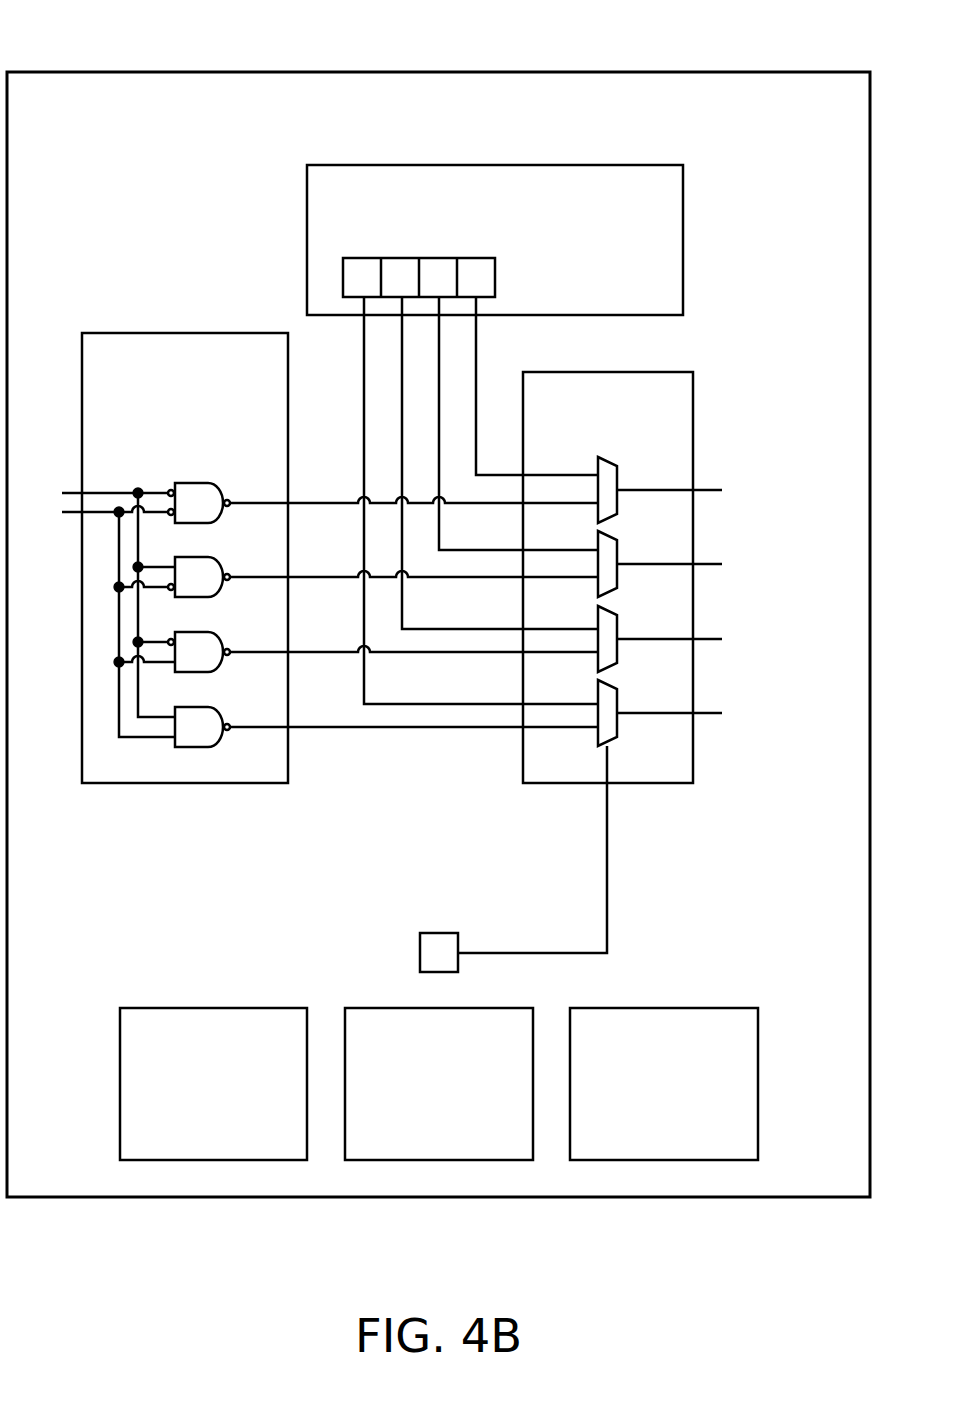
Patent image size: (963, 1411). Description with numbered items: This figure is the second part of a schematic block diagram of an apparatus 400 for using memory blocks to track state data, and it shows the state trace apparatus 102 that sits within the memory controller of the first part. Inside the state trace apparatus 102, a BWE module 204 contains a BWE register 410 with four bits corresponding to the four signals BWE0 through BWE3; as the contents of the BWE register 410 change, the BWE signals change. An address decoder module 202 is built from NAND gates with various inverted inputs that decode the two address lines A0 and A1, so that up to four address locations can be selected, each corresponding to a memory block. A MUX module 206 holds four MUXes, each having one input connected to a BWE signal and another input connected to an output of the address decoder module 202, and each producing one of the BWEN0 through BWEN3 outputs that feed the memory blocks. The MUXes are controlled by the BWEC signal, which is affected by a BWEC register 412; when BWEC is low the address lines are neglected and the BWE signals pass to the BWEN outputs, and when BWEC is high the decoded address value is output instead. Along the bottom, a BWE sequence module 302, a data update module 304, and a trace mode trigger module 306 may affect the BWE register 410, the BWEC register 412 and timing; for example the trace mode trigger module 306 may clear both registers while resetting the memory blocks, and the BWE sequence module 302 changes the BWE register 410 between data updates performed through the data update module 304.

The apparatus 400 is at (119, 63).
The state trace apparatus 102 is at (457, 137).
The BWE module 204 is at (515, 230).
The BWE register 410 is at (603, 303).
The address decoder module 202 is at (203, 430).
The MUX module 206 is at (627, 437).
The BWEC register 412 is at (342, 980).
The BWE sequence module 302 is at (233, 1142).
The data update module 304 is at (458, 1125).
The trace mode trigger module 306 is at (683, 1125).